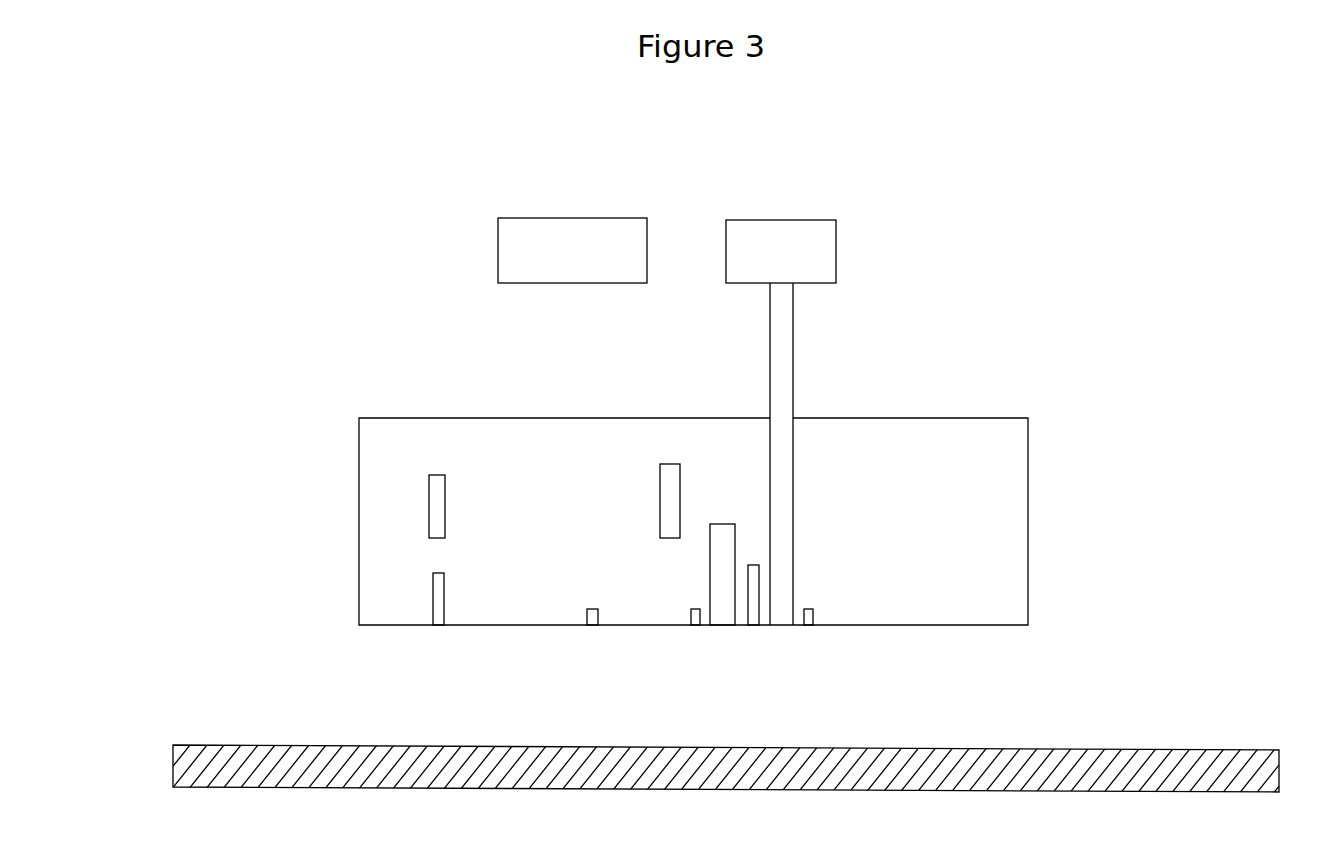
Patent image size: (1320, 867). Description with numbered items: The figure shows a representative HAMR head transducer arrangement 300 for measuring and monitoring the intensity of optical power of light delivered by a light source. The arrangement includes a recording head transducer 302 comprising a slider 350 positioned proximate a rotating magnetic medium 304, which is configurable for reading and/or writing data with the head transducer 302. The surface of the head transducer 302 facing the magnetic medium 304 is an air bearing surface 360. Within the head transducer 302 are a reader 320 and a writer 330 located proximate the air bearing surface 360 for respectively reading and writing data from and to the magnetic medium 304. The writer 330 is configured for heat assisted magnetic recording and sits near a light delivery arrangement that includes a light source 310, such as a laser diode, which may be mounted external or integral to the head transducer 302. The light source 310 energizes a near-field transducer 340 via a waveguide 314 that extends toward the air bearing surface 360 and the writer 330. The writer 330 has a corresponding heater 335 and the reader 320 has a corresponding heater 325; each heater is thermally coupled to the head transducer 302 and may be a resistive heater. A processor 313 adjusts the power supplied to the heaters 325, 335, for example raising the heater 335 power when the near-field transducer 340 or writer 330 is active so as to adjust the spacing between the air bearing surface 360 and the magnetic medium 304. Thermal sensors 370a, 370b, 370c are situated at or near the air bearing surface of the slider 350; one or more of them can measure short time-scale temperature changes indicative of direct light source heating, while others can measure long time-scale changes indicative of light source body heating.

The head transducer arrangement 300 is at (388, 126).
The recording head transducer 302 is at (1028, 478).
The magnetic medium 304 is at (1228, 749).
The light source 310 is at (837, 247).
The processor 313 is at (497, 248).
The waveguide 314 is at (794, 356).
The reader 320 is at (444, 600).
The heater 325 is at (445, 508).
The writer 330 is at (709, 572).
The heater 335 is at (659, 508).
The near-field transducer 340 is at (753, 564).
The slider 350 is at (381, 640).
The air bearing surface 360 is at (842, 642).
The thermal sensor 370a is at (808, 627).
The thermal sensor 370b is at (693, 627).
The thermal sensor 370c is at (592, 626).